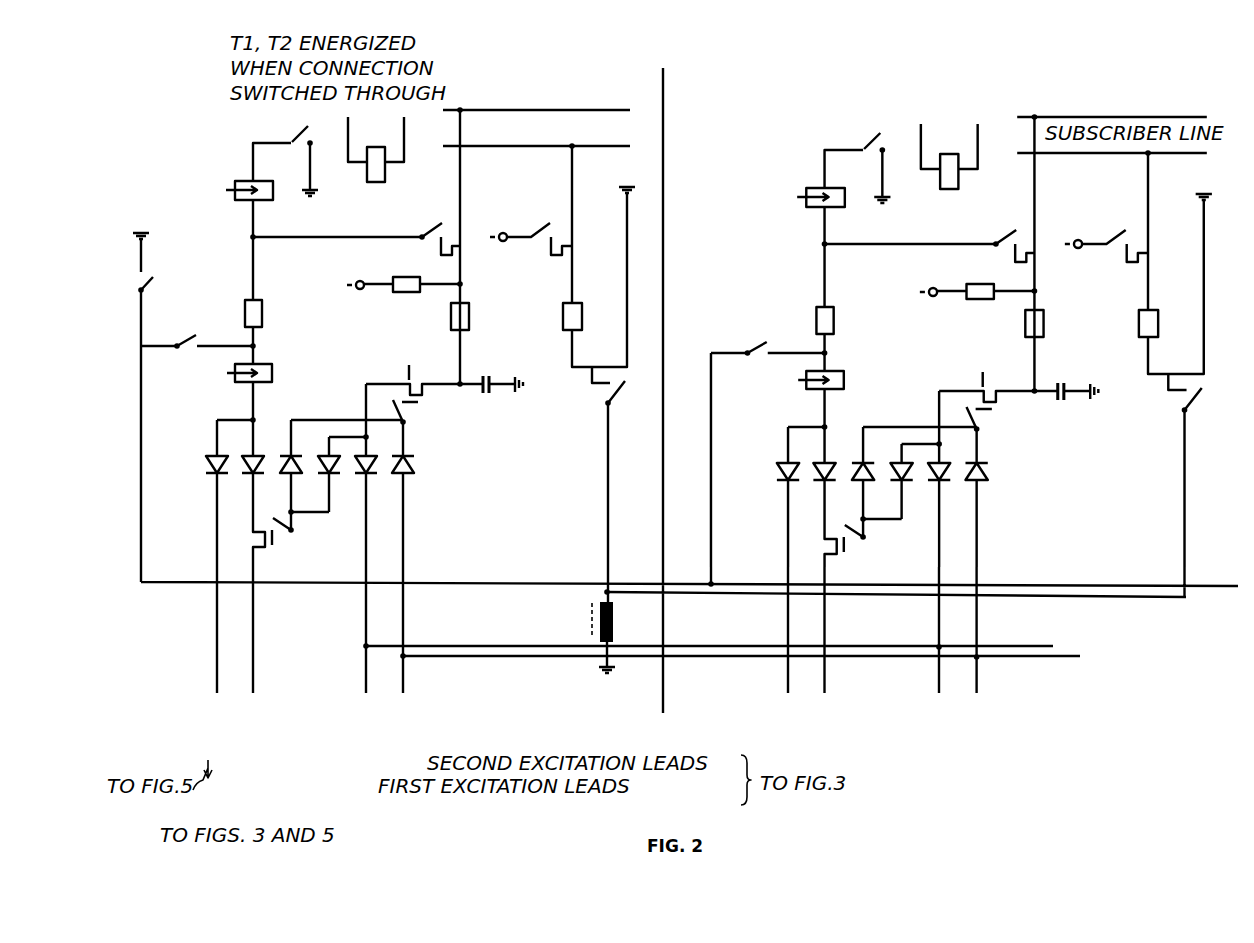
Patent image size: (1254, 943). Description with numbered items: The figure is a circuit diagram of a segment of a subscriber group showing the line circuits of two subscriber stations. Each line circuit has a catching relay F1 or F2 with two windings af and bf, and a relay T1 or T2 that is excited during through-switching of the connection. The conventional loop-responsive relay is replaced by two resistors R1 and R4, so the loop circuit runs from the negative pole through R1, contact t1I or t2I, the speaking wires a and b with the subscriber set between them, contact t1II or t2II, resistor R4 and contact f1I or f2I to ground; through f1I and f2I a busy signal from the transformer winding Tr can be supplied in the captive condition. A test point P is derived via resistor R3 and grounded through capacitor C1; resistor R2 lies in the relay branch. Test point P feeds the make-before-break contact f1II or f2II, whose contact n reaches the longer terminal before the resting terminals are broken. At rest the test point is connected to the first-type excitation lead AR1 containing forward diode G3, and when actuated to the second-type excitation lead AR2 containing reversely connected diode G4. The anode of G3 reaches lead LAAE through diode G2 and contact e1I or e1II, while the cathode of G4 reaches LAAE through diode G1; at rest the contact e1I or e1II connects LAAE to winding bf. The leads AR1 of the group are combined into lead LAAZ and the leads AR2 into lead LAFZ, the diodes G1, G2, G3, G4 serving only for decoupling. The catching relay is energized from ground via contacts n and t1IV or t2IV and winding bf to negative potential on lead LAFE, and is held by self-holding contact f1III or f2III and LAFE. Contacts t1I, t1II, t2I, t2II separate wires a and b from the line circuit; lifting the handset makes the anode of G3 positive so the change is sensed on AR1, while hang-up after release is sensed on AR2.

The catching relay F1 is at (238, 191).
The catching relay F2 is at (810, 198).
The relay T T1 is at (387, 145).
The relay T T2 is at (949, 156).
The resistor R1 is at (418, 276).
The resistor R2 is at (263, 315).
The resistor R3 is at (469, 320).
The resistor R4 is at (582, 320).
The capacitor C1 is at (501, 369).
The diode G1 is at (618, 461).
The diode G2 is at (600, 479).
The diode G3 is at (639, 443).
The diode G4 is at (681, 462).
The transformer winding Tr is at (589, 622).
The excitation lead of the first type AR1 is at (364, 560).
The excitation lead of the second type AR2 is at (403, 559).
The lead LAFE is at (515, 585).
The lead LAAE is at (255, 808).
The lead LAAZ is at (370, 783).
The lead LAFZ is at (417, 767).
The winding af is at (258, 200).
The winding bf is at (275, 390).
The speaking wire a is at (817, 114).
The speaking wire b is at (817, 150).
The test point P is at (745, 407).
The switching contact n is at (155, 279).
The contact t I t1I is at (428, 207).
The contact t II t1II is at (545, 207).
The contact t IV t1IV is at (192, 312).
The contact t I t2I is at (928, 237).
The contact t II t2II is at (1106, 237).
The contact t IV t2IV is at (769, 337).
The contact f I f1I is at (591, 395).
The contact f II f1II is at (434, 421).
The contact f III f1III is at (314, 126).
The contact f I f2I is at (1170, 470).
The contact f II f2II is at (988, 409).
The contact f III f2III is at (858, 161).
The contact e e1I is at (306, 544).
The contact e e1II is at (868, 524).